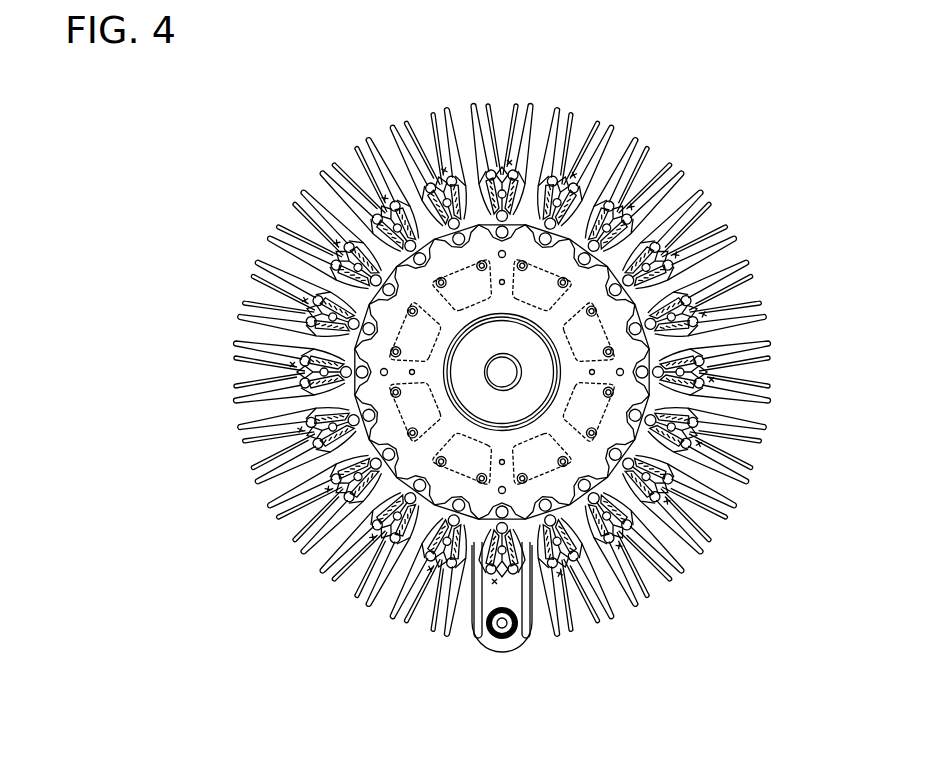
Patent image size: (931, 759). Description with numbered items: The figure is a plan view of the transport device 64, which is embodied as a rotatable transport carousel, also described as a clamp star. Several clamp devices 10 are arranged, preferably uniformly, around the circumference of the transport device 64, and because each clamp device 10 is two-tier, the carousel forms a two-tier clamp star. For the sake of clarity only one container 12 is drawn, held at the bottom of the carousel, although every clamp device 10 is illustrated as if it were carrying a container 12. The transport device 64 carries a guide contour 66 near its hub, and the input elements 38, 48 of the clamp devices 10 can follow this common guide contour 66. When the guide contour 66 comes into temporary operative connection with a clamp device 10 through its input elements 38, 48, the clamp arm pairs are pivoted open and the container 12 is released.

The clamp device 10 is at (384, 628).
The container 12 is at (488, 645).
The input element 38 is at (452, 258).
The input element 48 is at (462, 274).
The transport device 64 is at (506, 65).
The guide contour 66 is at (480, 277).